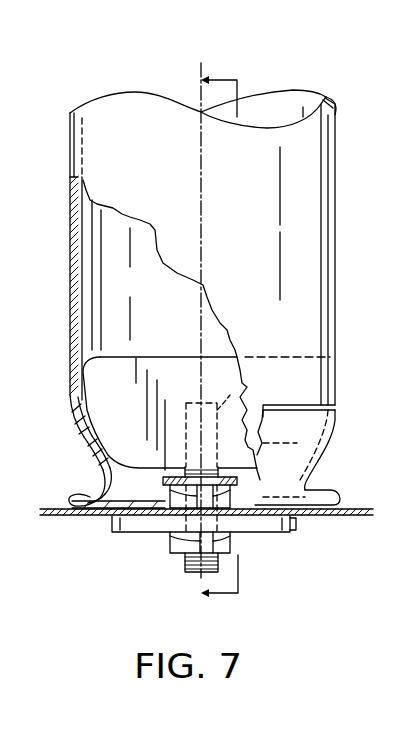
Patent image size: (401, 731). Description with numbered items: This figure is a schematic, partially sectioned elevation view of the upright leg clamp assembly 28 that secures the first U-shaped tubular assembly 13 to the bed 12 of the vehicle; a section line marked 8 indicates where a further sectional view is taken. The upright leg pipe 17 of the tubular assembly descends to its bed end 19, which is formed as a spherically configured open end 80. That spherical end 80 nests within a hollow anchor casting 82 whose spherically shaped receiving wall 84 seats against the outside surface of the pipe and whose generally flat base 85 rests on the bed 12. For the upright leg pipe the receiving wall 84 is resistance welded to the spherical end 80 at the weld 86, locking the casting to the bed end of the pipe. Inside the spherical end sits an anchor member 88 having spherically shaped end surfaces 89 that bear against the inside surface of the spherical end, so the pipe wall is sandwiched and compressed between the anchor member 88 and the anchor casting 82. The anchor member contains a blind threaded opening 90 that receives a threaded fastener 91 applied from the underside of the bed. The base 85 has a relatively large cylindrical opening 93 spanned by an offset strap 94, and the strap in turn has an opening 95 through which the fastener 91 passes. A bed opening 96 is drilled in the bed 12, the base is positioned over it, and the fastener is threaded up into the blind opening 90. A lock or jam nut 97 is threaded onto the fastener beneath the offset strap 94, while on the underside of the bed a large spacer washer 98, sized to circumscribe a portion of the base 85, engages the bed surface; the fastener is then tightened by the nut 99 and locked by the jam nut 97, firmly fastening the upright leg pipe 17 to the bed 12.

The section line 8- 8 is at (227, 335).
The bed 12 is at (352, 508).
The first U-shaped tubular assembly 13 is at (90, 78).
The upright leg pipe 17 is at (331, 91).
The bed end 19 is at (320, 187).
The upright leg clamp assembly 28 is at (331, 446).
The spherical end 80 is at (77, 397).
The anchor casting 82 is at (85, 477).
The spherically shaped receiving wall 84 is at (83, 443).
The base 85 is at (100, 512).
The weld 86 is at (78, 425).
The anchor member 88 is at (107, 365).
The spherically shaped end surfaces 89 is at (97, 455).
The blind threaded opening 90 is at (232, 395).
The threaded fastener 91 is at (188, 568).
The cylindrical opening 93 is at (137, 525).
The offset strap 94 is at (240, 484).
The opening 95 is at (193, 468).
The bed opening 96 is at (216, 518).
The jam nut 97 is at (246, 500).
The spacer washer 98 is at (292, 525).
The nut 99 is at (182, 540).